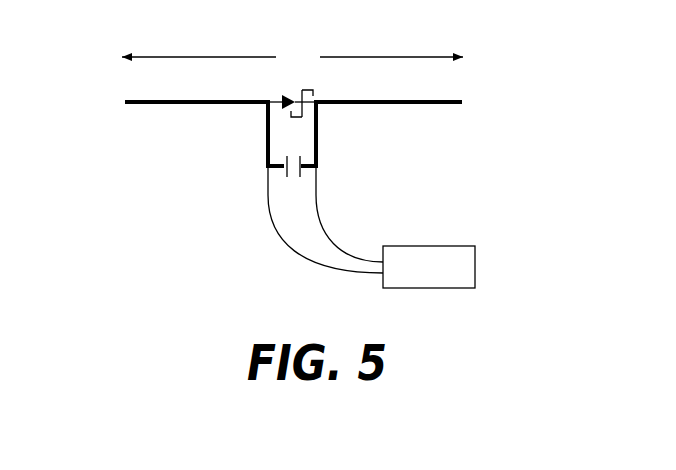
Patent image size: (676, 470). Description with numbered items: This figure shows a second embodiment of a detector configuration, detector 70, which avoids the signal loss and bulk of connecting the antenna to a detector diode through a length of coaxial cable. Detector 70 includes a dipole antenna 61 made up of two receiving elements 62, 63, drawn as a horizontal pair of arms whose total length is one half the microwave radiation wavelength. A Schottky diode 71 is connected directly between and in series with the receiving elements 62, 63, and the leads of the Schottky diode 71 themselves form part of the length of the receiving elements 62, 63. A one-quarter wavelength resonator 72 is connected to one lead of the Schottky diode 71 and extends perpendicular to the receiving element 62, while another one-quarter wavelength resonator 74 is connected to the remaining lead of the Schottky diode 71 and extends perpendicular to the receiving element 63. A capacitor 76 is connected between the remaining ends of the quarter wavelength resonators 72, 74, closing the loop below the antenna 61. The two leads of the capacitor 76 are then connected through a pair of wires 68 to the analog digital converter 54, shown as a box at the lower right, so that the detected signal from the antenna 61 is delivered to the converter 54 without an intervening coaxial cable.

The dipole antenna 61 is at (120, 78).
The receiving element 62 is at (138, 104).
The receiving element 63 is at (403, 104).
The Schottky diode 71 is at (283, 90).
The one-quarter wavelength resonator 72 is at (266, 137).
The one-quarter wavelength resonator 74 is at (318, 137).
The capacitor 76 is at (285, 172).
The pair of wires 68 is at (335, 241).
The analog digital converter 54 is at (452, 246).
The detector 70 is at (193, 203).